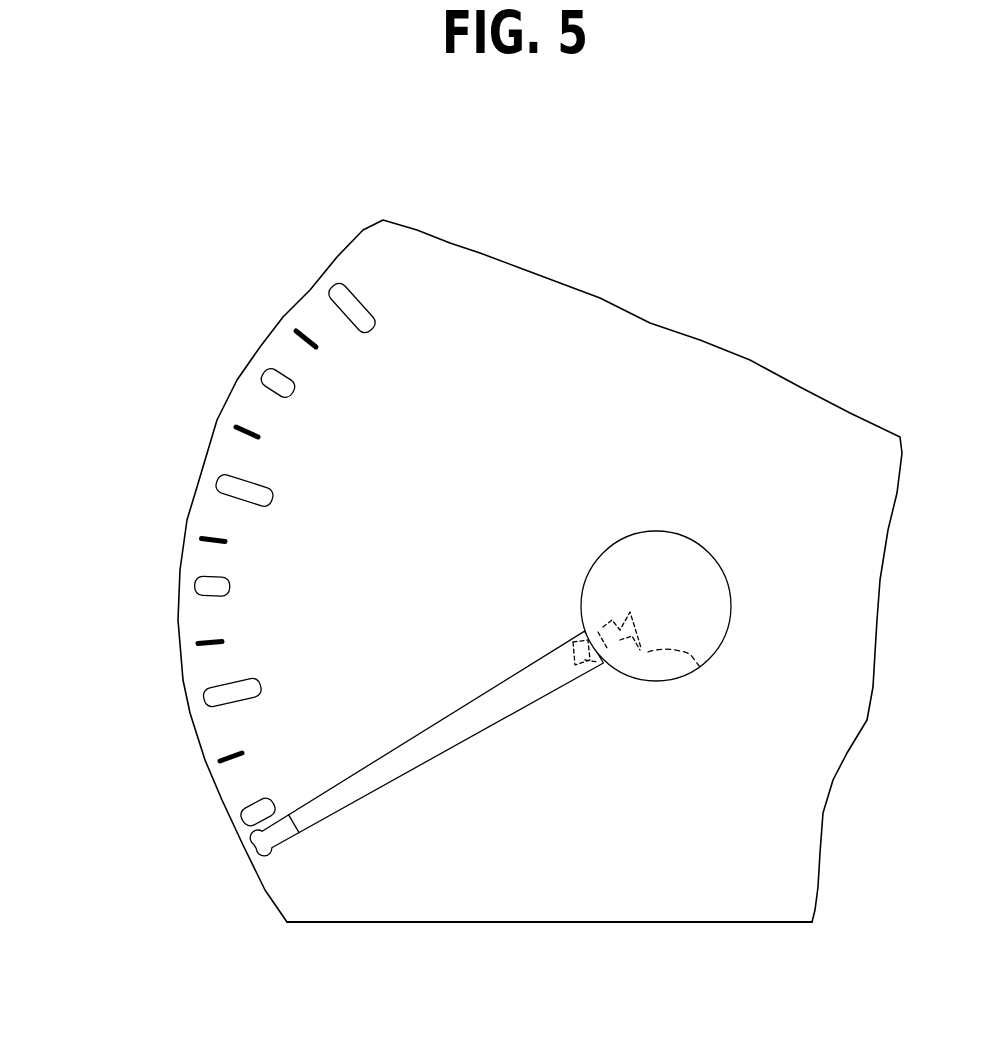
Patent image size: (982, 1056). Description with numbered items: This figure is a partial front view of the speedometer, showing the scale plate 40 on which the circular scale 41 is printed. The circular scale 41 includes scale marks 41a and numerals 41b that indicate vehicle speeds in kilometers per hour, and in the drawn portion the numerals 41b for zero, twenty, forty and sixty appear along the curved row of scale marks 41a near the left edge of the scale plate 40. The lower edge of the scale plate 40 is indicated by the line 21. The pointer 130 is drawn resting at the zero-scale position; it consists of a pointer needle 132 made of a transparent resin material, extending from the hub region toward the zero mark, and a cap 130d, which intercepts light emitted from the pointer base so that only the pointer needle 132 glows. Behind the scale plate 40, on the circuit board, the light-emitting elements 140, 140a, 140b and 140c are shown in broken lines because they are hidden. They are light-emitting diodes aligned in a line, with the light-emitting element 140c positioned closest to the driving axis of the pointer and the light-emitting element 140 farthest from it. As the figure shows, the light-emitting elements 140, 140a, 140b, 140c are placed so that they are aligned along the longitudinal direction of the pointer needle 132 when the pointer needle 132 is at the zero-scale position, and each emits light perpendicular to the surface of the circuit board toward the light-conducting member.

The lower edge of dial plate 21 is at (493, 920).
The scale plate 40 is at (385, 902).
The circular scale 41 is at (297, 334).
The scale marks 41a is at (221, 498).
The numerals 41b is at (375, 498).
The pointer 130 is at (552, 677).
The pointer needle 132 is at (427, 728).
The cap 130d is at (713, 592).
The light-emitting element 140 is at (656, 708).
The light-emitting element 140a is at (607, 673).
The light-emitting element 140b is at (622, 680).
The light-emitting element 140c is at (702, 668).